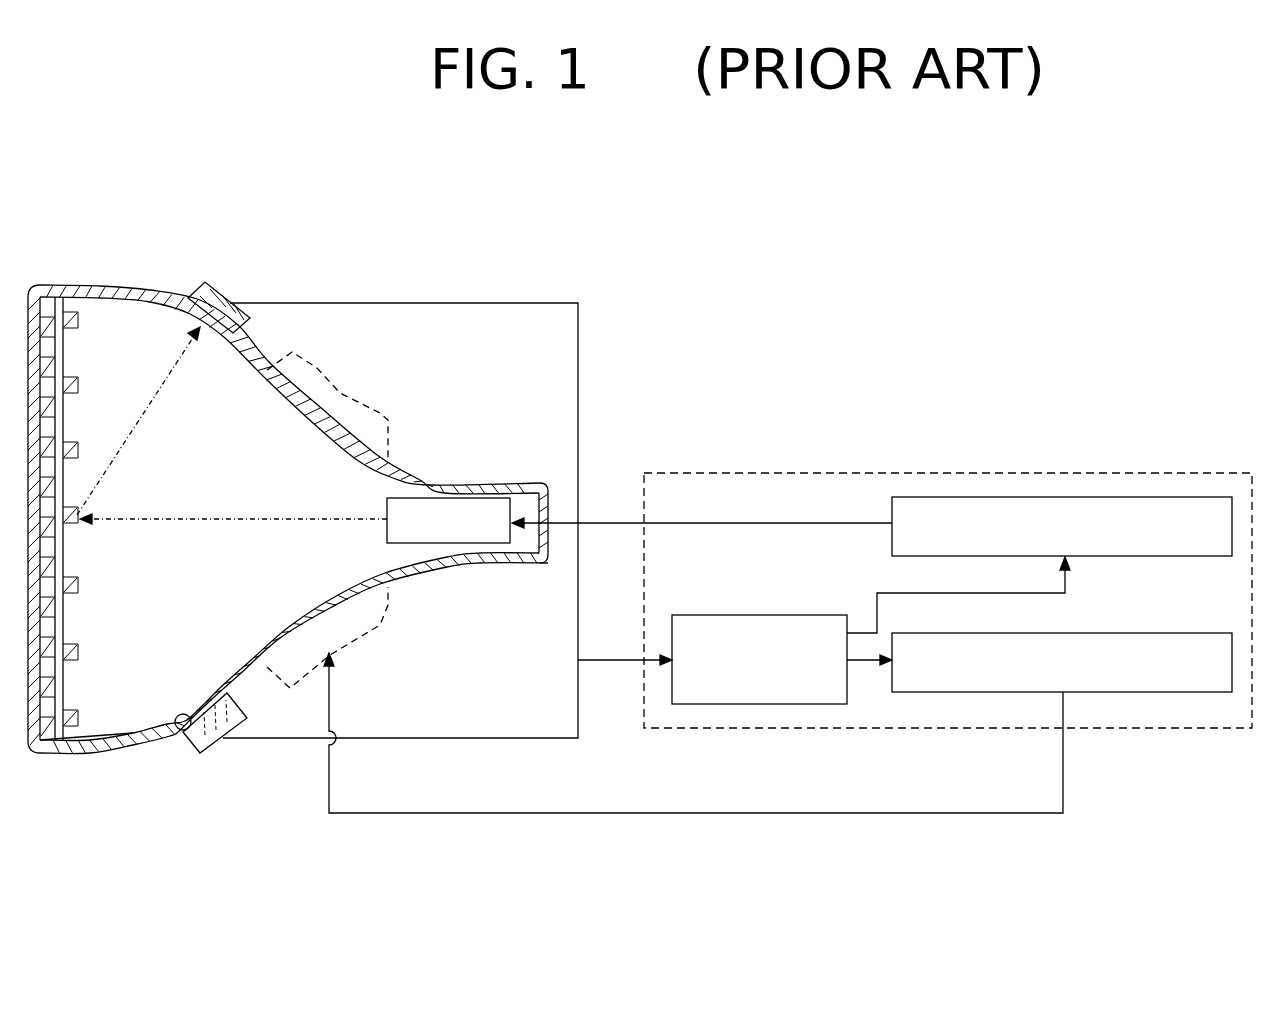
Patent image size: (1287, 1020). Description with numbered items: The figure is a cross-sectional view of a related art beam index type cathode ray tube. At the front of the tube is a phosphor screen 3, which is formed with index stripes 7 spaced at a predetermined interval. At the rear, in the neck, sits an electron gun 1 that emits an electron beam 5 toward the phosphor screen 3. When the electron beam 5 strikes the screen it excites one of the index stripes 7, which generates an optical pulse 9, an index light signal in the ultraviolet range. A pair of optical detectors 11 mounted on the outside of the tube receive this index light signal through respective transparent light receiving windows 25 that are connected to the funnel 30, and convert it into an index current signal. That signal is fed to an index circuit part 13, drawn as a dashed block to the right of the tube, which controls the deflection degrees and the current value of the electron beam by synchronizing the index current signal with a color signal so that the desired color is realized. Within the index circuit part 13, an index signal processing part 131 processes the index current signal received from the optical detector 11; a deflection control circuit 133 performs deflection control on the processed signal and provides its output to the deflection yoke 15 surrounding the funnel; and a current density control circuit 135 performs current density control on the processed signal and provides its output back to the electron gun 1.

The electron gun 1 is at (455, 506).
The phosphor screen 3 is at (100, 382).
The electron beam 5 is at (237, 522).
The index stripes 7 is at (73, 651).
The optical pulse 9 is at (137, 423).
The optical detectors 11 is at (217, 290).
The index circuit part 13 is at (836, 472).
The deflection yoke 15 is at (340, 392).
The transparent light receiving windows 25 is at (172, 733).
The funnel 30 is at (130, 748).
The index signal processing part 131 is at (727, 704).
The deflection control circuit 133 is at (1105, 692).
The current density control circuit 135 is at (1085, 497).